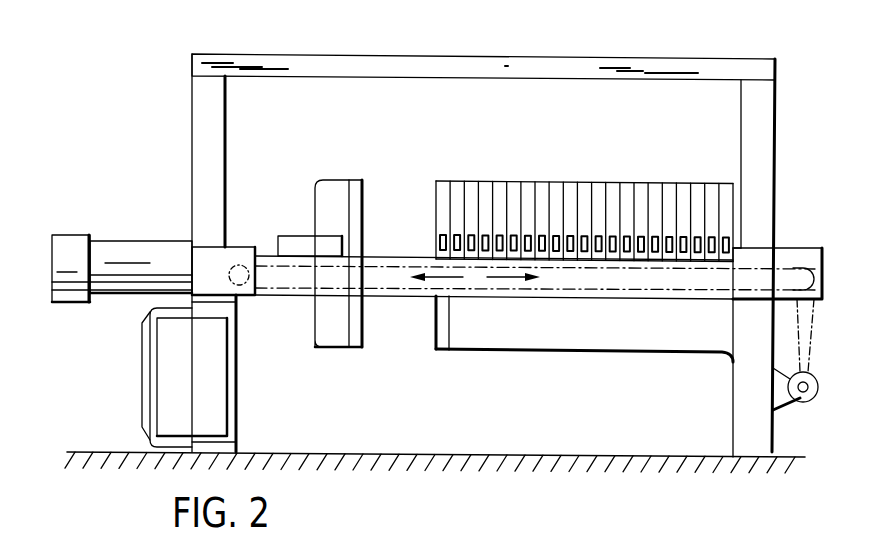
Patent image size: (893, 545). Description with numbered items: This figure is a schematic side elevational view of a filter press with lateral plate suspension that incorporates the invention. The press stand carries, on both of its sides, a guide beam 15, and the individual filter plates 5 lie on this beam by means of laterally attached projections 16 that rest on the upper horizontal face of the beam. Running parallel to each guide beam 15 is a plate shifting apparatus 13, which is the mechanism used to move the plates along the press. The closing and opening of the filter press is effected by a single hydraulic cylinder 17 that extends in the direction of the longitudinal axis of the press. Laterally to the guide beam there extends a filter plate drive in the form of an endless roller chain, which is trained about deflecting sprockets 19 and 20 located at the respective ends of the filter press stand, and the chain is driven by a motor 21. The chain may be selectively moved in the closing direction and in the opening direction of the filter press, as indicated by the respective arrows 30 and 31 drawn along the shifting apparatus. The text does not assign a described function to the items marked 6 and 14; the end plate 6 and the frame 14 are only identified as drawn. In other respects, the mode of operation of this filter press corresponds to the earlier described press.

The filter plates 5 is at (527, 188).
The end plate 6 is at (332, 190).
The plate shifting apparatus 13 is at (384, 291).
The frame 14 is at (757, 105).
The guide beam 15 is at (628, 282).
The projections 16 is at (438, 243).
The hydraulic cylinder 17 is at (130, 252).
The deflecting sprocket 19 is at (239, 270).
The deflecting sprocket 20 is at (800, 278).
The motor 21 is at (800, 402).
The arrow 30 is at (500, 280).
The arrow 31 is at (437, 279).